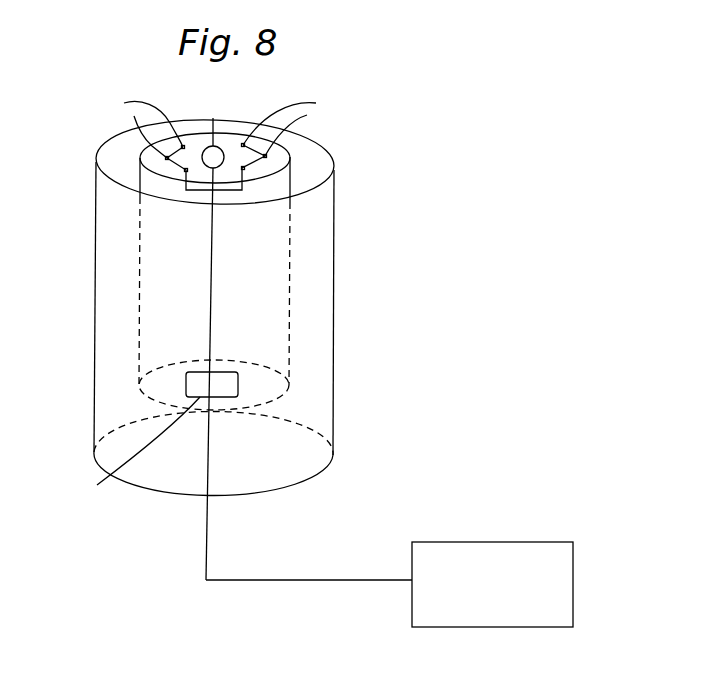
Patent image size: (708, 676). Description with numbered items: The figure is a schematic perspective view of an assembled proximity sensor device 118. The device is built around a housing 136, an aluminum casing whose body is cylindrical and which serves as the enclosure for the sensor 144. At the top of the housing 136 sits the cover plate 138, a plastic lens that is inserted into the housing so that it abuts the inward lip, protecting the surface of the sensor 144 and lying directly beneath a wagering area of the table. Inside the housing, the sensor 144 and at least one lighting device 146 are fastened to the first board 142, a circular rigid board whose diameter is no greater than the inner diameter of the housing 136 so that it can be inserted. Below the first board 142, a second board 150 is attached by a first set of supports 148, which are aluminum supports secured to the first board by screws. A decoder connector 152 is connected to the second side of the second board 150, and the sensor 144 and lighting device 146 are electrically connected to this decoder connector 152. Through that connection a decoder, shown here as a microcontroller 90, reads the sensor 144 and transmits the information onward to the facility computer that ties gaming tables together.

The microcontroller 90 is at (412, 608).
The proximity sensor device 118 is at (366, 272).
The housing 136 is at (333, 432).
The cover plate 138 is at (313, 150).
The first board 142 is at (336, 172).
The sensor 144 is at (213, 118).
The lighting device 146 is at (125, 103).
The first set of supports 148 is at (139, 231).
The second board 150 is at (186, 397).
The decoder connector 152 is at (97, 485).